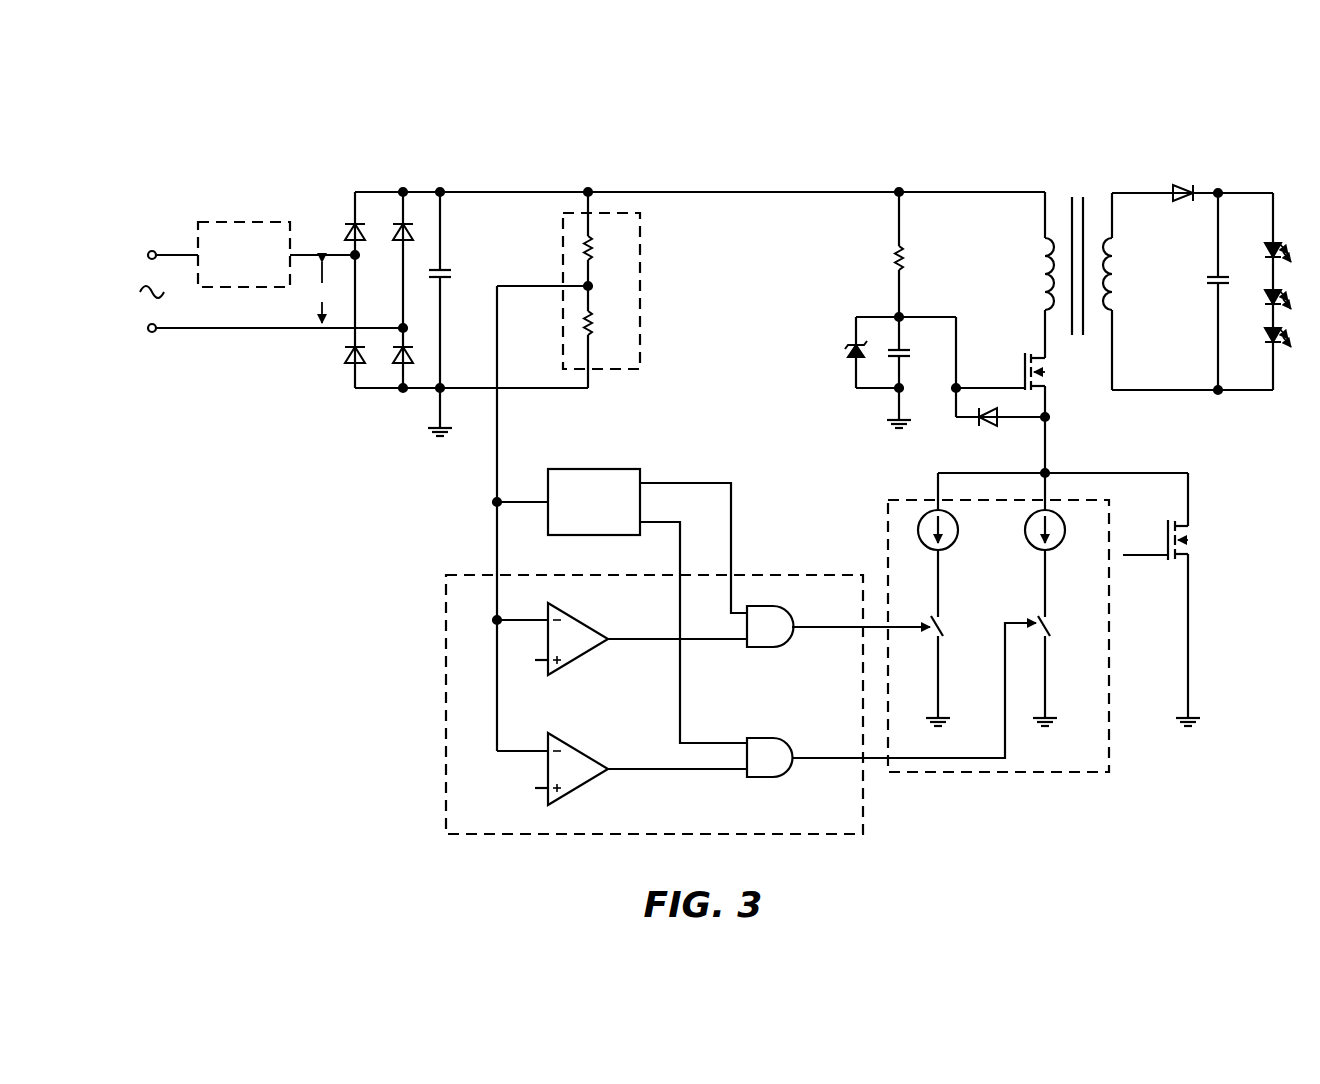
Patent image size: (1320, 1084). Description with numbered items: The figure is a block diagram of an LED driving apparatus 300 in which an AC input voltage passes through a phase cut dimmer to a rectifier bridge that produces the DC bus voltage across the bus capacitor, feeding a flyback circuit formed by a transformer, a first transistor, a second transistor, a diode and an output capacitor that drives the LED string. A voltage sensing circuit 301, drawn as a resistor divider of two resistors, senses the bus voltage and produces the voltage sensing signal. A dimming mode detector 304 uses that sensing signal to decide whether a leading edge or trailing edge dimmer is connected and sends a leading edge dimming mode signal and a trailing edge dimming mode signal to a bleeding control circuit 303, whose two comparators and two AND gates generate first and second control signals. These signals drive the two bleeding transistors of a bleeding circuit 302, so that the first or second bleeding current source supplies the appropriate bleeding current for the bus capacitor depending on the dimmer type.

The LED driving apparatus 300 is at (1285, 115).
The voltage sensing circuit 301 is at (616, 369).
The bleeding circuit 302 is at (938, 773).
The bleeding control circuit 303 is at (503, 835).
The dimming mode detector 304 is at (572, 536).